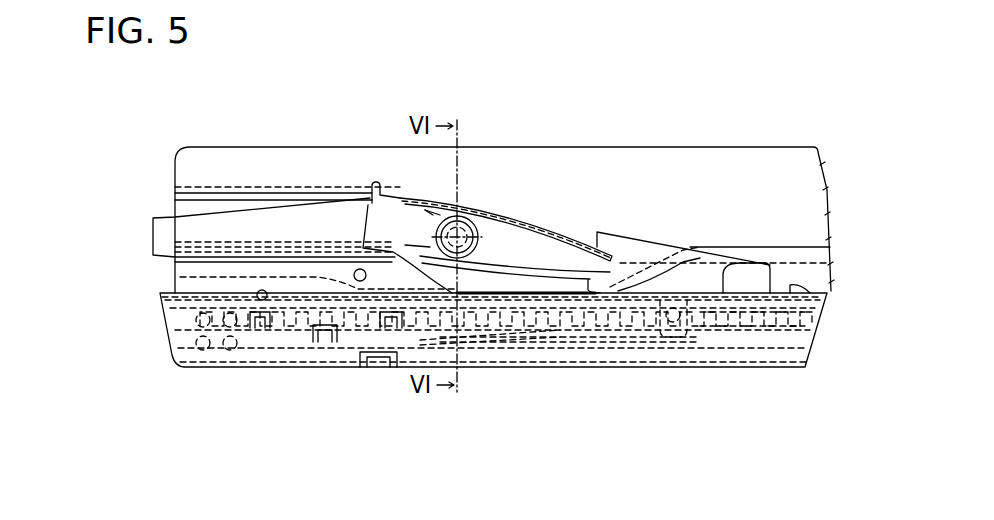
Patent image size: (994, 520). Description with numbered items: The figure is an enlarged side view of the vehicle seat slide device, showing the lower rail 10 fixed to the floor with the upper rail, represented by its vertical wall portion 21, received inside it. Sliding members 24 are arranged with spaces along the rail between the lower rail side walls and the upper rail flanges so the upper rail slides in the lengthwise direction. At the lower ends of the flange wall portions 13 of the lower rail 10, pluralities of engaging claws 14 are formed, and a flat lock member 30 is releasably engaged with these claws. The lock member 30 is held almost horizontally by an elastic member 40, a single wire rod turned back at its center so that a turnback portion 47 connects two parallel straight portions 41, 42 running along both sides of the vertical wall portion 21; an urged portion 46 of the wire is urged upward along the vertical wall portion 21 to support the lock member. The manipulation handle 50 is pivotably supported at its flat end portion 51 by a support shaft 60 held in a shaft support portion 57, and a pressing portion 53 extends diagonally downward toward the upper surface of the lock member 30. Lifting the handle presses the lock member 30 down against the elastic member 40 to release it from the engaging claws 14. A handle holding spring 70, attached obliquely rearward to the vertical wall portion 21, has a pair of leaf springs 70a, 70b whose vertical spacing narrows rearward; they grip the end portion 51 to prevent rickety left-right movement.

The lower rail 10 is at (778, 367).
The flange wall portion 13 is at (417, 320).
The engaging claw 14 is at (518, 325).
The vertical wall portion 21 is at (743, 158).
The sliding member 24 is at (215, 350).
The lock member 30 is at (712, 305).
The elastic member 40 is at (482, 333).
The straight portion 41 is at (563, 325).
The straight portion 42 is at (570, 388).
The urged portion 46 is at (678, 337).
The turnback portion 47 is at (812, 293).
The manipulation handle 50 is at (237, 210).
The end portion 51 is at (677, 239).
The pressing portion 53 is at (725, 293).
The shaft support portion 57 is at (498, 233).
The support shaft 60 is at (480, 267).
The handle holding spring 70 is at (527, 220).
The leaf spring 70a is at (533, 232).
The leaf spring 70b is at (523, 273).